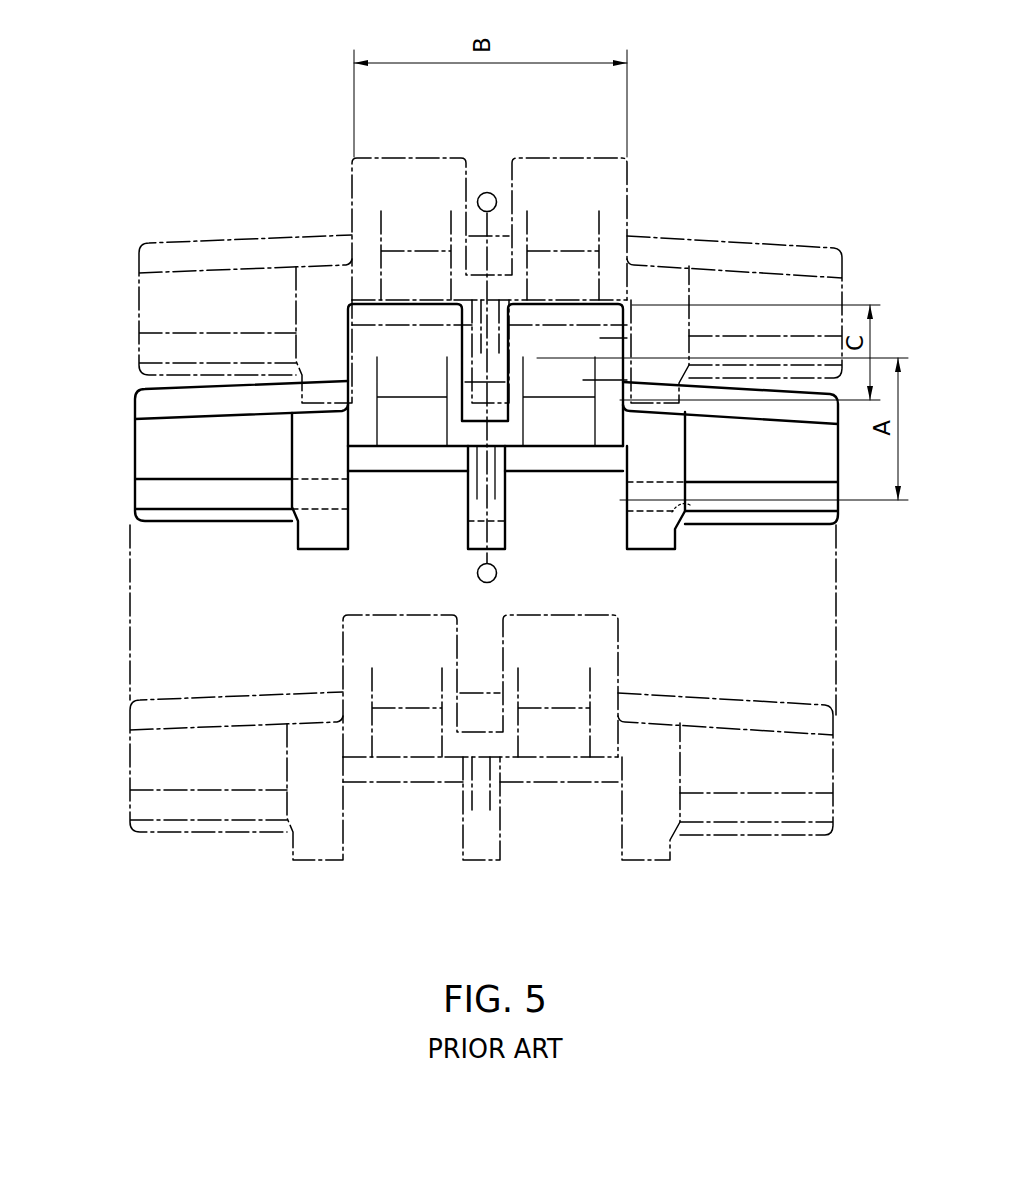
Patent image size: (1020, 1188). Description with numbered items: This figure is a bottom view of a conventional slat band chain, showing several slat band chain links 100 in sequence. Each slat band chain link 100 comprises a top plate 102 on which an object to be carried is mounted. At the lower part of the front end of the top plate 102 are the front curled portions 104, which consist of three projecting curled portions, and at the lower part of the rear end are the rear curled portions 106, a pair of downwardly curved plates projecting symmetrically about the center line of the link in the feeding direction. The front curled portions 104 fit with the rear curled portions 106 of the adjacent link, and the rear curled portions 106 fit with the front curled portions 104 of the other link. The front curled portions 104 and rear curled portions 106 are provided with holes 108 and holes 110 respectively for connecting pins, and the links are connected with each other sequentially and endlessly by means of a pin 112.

The slat band chain link 100 is at (136, 237).
The top plate 102 is at (132, 288).
The front curled portions 104 is at (293, 540).
The rear curled portions 106 is at (353, 170).
The holes 108 is at (700, 518).
The holes 110 is at (600, 340).
The pin 112 is at (583, 380).